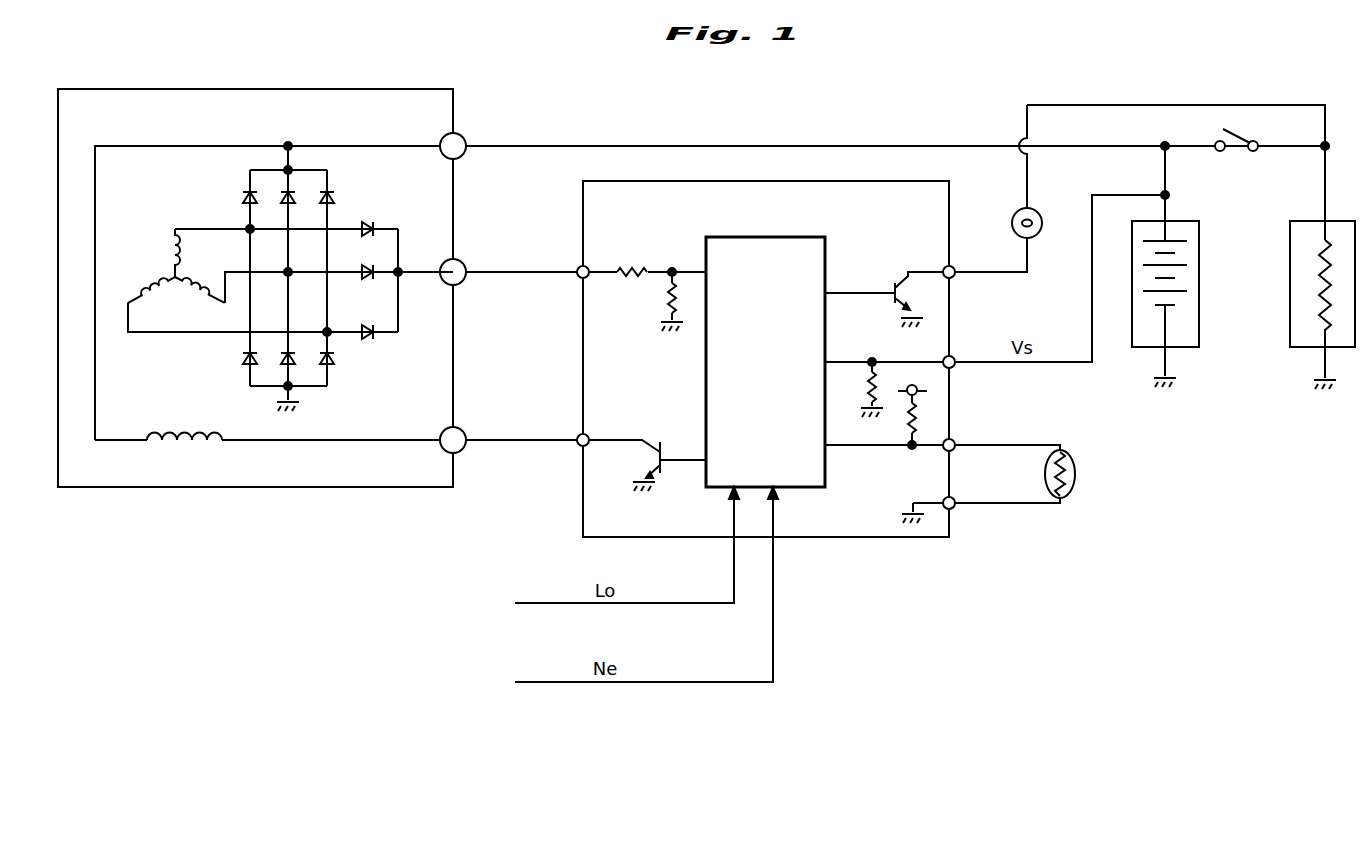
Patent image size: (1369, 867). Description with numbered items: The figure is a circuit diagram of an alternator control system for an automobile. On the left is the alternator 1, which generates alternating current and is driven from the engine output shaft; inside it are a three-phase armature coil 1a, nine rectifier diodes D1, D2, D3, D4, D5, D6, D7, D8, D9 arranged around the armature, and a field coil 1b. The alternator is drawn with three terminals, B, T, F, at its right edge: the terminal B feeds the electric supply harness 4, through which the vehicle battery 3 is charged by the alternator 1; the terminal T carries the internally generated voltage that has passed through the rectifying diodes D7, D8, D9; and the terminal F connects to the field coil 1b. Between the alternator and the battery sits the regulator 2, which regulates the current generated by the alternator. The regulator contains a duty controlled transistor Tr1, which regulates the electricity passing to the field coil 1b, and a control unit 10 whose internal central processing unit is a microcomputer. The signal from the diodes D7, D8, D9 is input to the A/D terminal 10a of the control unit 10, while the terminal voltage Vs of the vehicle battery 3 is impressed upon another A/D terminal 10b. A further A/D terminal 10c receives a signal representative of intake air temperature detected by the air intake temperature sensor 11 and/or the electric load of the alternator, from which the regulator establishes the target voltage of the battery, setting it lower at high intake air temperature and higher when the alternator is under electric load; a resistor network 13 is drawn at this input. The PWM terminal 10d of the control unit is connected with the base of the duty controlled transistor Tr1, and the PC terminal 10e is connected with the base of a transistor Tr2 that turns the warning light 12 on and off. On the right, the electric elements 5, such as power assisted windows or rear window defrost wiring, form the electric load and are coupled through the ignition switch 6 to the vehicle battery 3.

The alternator 1 is at (259, 86).
The three-phase armature coil 1a is at (155, 270).
The field coil 1b is at (160, 432).
The regulator 2 is at (792, 542).
The vehicle battery 3 is at (1200, 250).
The electric supply harness 4 is at (720, 145).
The electric elements 5 is at (1290, 274).
The ignition switch 6 is at (1234, 154).
The control unit 10 is at (763, 235).
The A/D terminal 10a is at (718, 257).
The A/D terminal 10b is at (826, 350).
The A/D terminal 10c is at (826, 456).
The PWM terminal 10d is at (722, 479).
The PC terminal 10e is at (826, 280).
The air intake temperature sensor 11 is at (1077, 472).
The warning light 12 is at (1040, 208).
The variable resistor 13 is at (810, 380).
The rectifier diode D1 is at (243, 198).
The rectifier diode D2 is at (283, 202).
The rectifier diode D3 is at (334, 197).
The rectifier diode D4 is at (243, 363).
The rectifier diode D5 is at (283, 365).
The rectifier diode D6 is at (330, 367).
The rectifying diode D7 is at (373, 223).
The rectifying diode D8 is at (368, 282).
The rectifying diode D9 is at (368, 344).
The duty controlled transistor Tr1 is at (660, 440).
The transistor Tr2 is at (894, 282).
The B terminal B is at (453, 146).
The T terminal T is at (453, 272).
The F terminal F is at (453, 440).